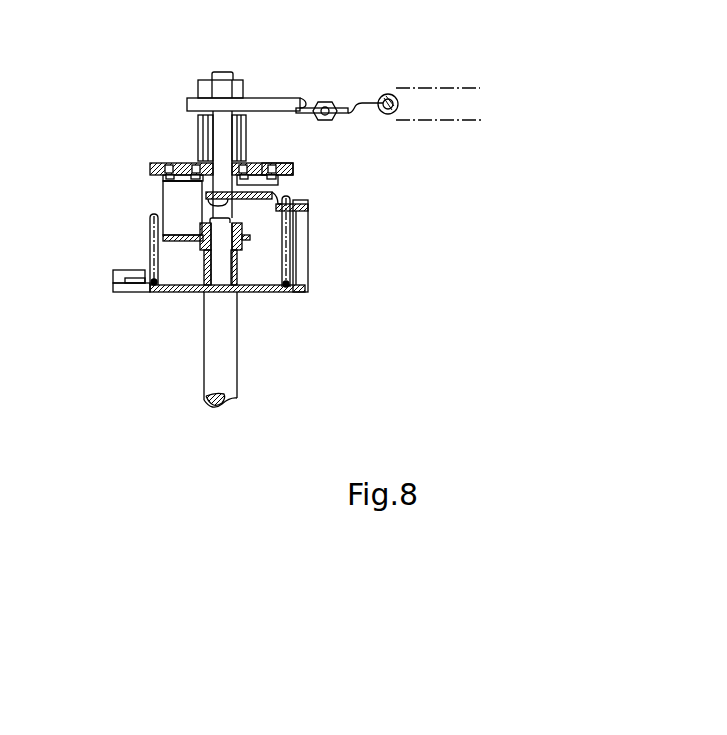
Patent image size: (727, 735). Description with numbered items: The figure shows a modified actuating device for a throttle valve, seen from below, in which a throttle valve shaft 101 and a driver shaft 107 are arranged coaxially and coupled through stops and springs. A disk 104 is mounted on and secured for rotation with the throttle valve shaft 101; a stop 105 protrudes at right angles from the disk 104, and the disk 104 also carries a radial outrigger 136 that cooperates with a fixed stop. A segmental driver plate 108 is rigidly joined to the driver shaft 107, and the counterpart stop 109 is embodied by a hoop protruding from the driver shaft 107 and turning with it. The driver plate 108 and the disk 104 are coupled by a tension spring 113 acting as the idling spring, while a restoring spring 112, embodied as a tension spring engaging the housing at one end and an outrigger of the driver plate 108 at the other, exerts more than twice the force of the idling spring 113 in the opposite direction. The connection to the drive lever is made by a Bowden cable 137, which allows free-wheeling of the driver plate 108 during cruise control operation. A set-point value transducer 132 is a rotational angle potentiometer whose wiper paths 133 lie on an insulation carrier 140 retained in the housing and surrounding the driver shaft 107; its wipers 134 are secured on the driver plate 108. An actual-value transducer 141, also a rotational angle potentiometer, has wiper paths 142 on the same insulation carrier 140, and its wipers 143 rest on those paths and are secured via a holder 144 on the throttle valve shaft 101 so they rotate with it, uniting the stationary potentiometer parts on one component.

The throttle valve shaft 101 is at (208, 387).
The disk 104 is at (253, 293).
The stop 105 is at (305, 252).
The driver shaft 107 is at (218, 138).
The driver plate 108 is at (252, 102).
The counterpart stop 109 is at (318, 214).
The restoring spring 112 is at (420, 99).
The tension spring 113 is at (150, 237).
The set-point value transducer 132 is at (282, 152).
The wiper paths 133 is at (262, 177).
The wipers 134 is at (276, 181).
The radial outrigger 136 is at (137, 293).
The Bowden cable 137 is at (309, 102).
The insulation carrier 140 is at (160, 162).
The actual-value transducer 141 is at (150, 193).
The wiper paths 142 is at (160, 184).
The wipers 143 is at (160, 178).
The holder 144 is at (278, 293).